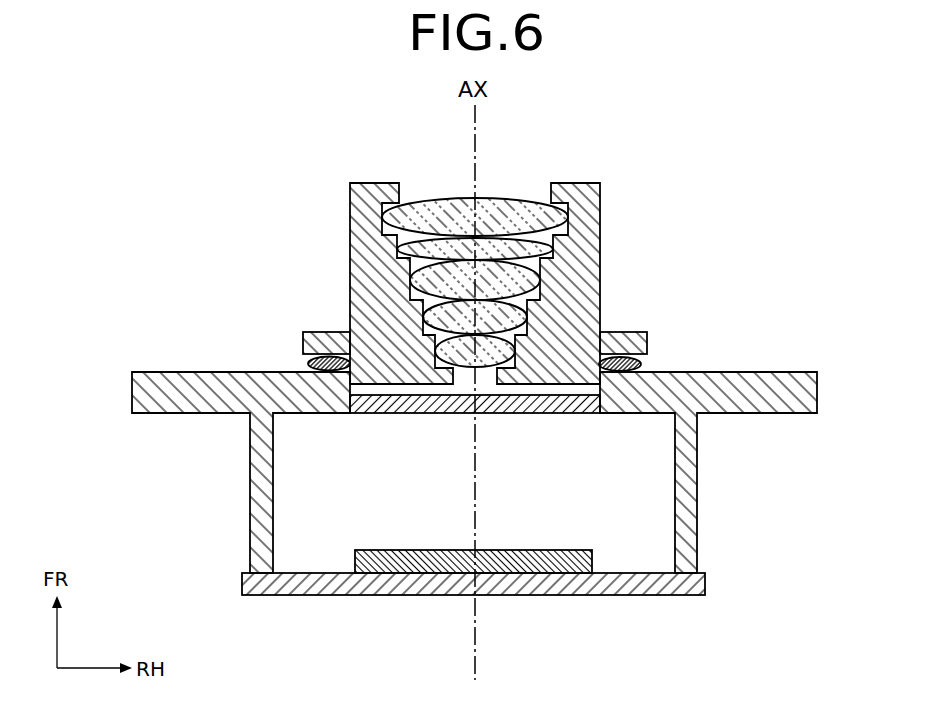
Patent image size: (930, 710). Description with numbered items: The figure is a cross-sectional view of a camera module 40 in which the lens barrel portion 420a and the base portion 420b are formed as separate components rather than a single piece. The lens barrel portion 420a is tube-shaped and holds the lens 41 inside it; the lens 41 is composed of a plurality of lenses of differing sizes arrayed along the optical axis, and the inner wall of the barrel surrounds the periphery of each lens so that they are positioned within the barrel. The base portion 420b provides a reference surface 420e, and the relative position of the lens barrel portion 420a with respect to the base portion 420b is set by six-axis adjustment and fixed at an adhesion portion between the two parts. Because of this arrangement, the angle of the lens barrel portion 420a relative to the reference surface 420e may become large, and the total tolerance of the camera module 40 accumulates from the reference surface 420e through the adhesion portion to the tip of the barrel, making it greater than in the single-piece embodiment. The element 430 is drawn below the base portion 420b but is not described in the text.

The camera module 40 is at (652, 156).
The lens 41 is at (557, 364).
The lens barrel portion 420a is at (350, 258).
The base portion 420b is at (714, 360).
The reference surface 420e is at (237, 372).
The bottom plate / substrate 430 is at (607, 595).